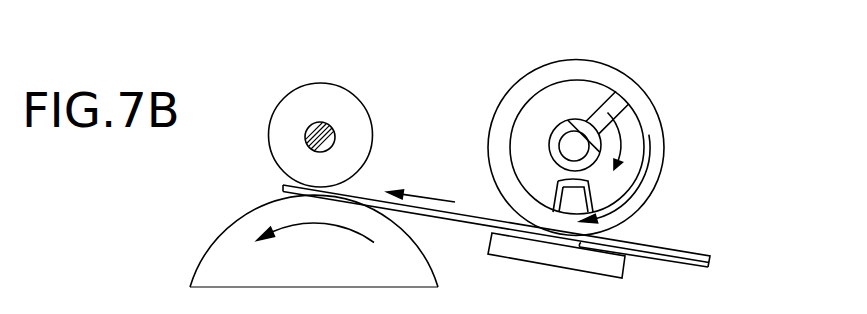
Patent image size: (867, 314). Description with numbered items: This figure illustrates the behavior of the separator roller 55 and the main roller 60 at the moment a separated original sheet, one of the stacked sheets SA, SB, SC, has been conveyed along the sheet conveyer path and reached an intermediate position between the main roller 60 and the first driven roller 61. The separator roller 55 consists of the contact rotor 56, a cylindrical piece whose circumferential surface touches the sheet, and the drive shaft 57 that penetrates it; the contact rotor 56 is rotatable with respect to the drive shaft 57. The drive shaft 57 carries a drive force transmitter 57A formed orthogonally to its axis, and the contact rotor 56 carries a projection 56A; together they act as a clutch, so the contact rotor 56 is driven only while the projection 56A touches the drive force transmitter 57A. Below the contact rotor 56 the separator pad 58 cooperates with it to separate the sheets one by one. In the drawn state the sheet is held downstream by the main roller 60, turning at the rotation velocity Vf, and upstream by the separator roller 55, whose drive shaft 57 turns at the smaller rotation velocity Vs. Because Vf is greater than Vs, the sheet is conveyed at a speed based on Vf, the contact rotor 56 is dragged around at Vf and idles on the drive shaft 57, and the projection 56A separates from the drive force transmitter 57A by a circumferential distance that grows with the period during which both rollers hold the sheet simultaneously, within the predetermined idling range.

The separator roller 55 is at (506, 64).
The contact rotor 56 is at (580, 68).
The projection 56A is at (563, 189).
The drive shaft 57 is at (563, 147).
The drive force transmitter 57A is at (618, 93).
The separator pad 58 is at (499, 252).
The main roller 60 is at (240, 235).
The first driven roller 61 is at (298, 101).
The rotation velocity of the drive shaft Vs is at (623, 133).
The rotation velocity of the main roller Vf is at (641, 192).
The sheet A SA is at (682, 251).
The sheet B SB is at (496, 227).
The sheet C SC is at (643, 255).